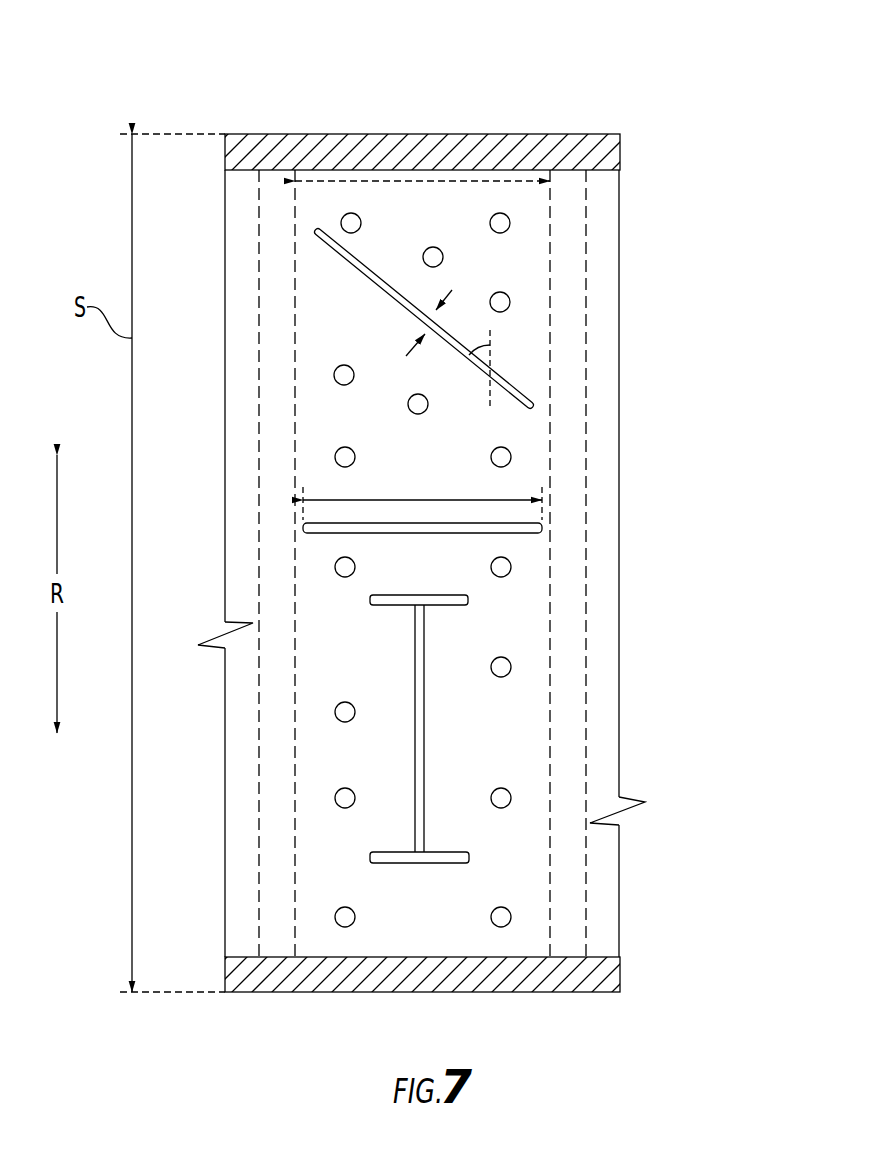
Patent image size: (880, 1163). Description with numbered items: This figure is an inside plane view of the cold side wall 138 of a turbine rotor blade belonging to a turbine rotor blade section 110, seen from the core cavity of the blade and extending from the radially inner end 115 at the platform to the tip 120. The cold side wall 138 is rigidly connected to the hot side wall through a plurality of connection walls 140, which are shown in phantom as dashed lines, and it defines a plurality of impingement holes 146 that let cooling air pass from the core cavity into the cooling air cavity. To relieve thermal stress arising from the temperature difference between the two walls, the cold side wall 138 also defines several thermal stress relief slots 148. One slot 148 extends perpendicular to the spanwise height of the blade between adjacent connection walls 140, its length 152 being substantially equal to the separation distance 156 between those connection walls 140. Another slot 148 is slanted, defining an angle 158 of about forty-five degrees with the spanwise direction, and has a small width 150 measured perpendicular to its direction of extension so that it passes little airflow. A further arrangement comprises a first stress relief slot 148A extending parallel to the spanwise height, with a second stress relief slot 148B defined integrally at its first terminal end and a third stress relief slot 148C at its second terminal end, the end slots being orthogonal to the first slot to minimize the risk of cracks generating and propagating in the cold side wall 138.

The turbine rotor blade section 110 is at (732, 95).
The radially inner end 115 is at (548, 994).
The tip 120 is at (467, 133).
The cold side wall 138 is at (520, 357).
The connection walls 140 is at (270, 282).
The impingement holes 146 is at (506, 224).
The thermal stress relief slot 148 is at (377, 275).
The first stress relief slot 148A is at (425, 685).
The second stress relief slot 148B is at (448, 590).
The third stress relief slot 148C is at (455, 850).
The width 150 is at (435, 315).
The length 152 is at (398, 500).
The separation distance 156 is at (377, 181).
The angle 158 is at (464, 347).